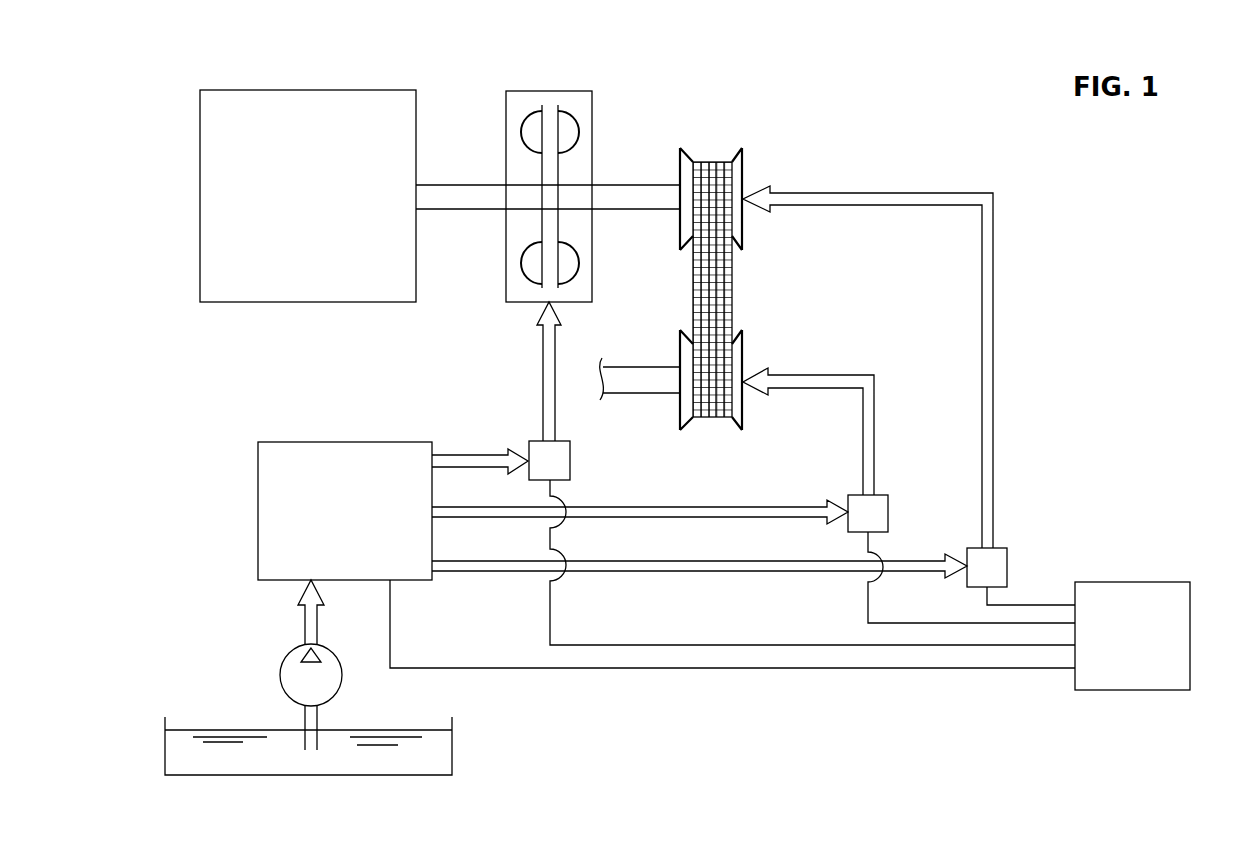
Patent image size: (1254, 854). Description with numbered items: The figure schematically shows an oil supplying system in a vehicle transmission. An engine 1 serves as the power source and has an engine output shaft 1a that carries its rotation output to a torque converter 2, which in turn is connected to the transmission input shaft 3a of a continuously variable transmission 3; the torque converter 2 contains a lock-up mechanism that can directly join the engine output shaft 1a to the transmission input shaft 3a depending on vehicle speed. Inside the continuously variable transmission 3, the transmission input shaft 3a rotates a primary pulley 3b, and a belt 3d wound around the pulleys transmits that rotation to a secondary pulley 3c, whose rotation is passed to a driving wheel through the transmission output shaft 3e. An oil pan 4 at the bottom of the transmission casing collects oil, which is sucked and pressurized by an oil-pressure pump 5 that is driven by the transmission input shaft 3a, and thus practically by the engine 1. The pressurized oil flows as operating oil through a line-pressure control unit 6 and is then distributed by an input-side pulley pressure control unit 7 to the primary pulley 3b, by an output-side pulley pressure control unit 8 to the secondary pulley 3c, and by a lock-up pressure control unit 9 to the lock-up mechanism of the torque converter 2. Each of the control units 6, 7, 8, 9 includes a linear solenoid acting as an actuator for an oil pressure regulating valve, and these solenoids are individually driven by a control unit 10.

The engine 1 is at (312, 90).
The engine output shaft 1a is at (460, 184).
The torque converter 2 is at (546, 91).
The continuously variable transmission 3 is at (742, 127).
The transmission input shaft 3a is at (640, 184).
The primary pulley 3b is at (745, 232).
The secondary pulley 3c is at (743, 414).
The belt 3d is at (733, 290).
The transmission output shaft 3e is at (636, 367).
The oil pan 4 is at (452, 752).
The oil-pressure pump 5 is at (280, 665).
The line-pressure control unit 6 is at (328, 442).
The input-side pulley pressure control unit 7 is at (1000, 548).
The output-side pulley pressure control unit 8 is at (880, 495).
The lock-up pressure control unit 9 is at (538, 441).
The control unit 10 is at (1175, 582).